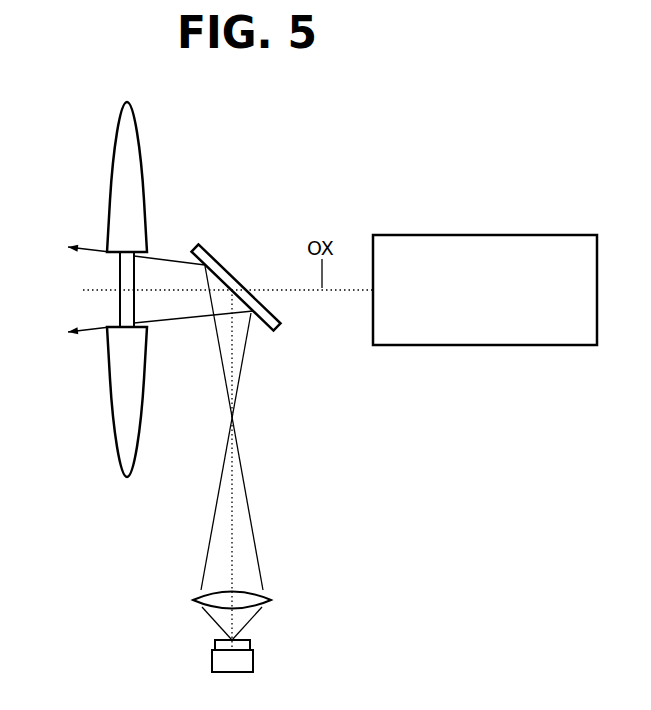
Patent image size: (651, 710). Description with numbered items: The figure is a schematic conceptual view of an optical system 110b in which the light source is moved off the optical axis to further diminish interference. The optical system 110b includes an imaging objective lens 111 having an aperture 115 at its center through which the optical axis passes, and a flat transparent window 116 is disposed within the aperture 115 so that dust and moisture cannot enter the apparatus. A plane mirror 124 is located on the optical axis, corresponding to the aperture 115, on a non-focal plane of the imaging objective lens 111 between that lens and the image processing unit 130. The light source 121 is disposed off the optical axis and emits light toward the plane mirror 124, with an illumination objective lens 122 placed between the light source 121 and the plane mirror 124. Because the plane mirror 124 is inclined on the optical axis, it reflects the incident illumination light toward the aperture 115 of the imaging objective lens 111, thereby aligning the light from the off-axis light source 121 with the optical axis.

The optical system 110b is at (140, 368).
The imaging objective lens 111 is at (113, 173).
The aperture 115 is at (100, 269).
The flat transparent window 116 is at (120, 313).
The plane mirror 124 is at (222, 262).
The illumination objective lens 122 is at (272, 600).
The light source 121 is at (254, 660).
The image processing unit 130 is at (486, 233).